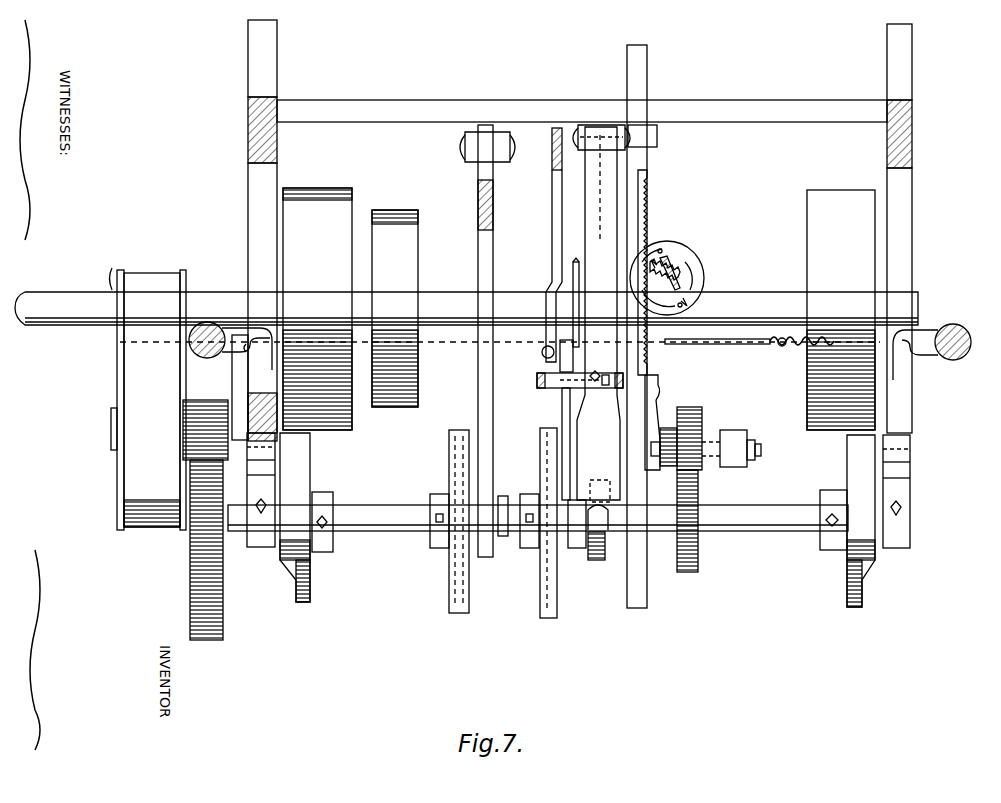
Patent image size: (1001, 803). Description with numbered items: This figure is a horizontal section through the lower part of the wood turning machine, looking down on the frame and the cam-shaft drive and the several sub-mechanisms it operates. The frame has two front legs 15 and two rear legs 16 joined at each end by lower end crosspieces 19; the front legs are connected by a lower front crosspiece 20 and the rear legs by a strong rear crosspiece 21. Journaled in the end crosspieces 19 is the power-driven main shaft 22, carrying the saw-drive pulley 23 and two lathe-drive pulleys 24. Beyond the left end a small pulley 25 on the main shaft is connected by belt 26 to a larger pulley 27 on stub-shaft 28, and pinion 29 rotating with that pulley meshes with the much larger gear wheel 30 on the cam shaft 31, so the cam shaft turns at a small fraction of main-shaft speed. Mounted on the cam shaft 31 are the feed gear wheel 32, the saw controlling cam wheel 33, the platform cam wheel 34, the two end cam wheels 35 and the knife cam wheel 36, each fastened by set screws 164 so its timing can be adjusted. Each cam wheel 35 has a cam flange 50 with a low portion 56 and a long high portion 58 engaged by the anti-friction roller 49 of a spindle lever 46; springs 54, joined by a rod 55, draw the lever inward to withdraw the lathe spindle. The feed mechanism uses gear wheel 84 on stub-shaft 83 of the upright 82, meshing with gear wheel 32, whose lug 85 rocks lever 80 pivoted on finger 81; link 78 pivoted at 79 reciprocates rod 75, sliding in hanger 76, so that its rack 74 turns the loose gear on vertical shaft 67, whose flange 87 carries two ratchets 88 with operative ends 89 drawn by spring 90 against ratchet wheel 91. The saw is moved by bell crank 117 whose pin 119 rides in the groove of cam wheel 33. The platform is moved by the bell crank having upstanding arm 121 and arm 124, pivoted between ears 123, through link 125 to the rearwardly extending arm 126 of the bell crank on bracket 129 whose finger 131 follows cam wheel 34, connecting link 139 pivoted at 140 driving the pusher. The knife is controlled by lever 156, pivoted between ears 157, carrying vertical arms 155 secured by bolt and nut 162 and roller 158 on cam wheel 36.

The front leg 15 is at (265, 478).
The rear leg 16 is at (266, 74).
The lower end crosspiece 19 is at (266, 178).
The lower front crosspiece 20 is at (806, 540).
The rear crosspiece 21 is at (582, 111).
The main shaft 22 is at (35, 292).
The saw-drive pulley 23 is at (395, 308).
The lathe-drive pulley 24 is at (579, 309).
The small pulley 25 is at (106, 264).
The belt 26 is at (130, 352).
The larger pulley 27 is at (118, 392).
The stub-shaft 28 is at (110, 428).
The pinion 29 is at (200, 425).
The gear wheel 30 is at (190, 592).
The cam shaft 31 is at (236, 534).
The gear wheel 32 is at (690, 572).
The saw controlling cam wheel 33 is at (449, 600).
The cam wheel 34 is at (546, 602).
The cam wheel 35 is at (311, 584).
The cam wheel 36 is at (597, 562).
The lever 46 is at (207, 322).
The anti-friction roller 49 is at (290, 456).
The cam flange 50 is at (285, 468).
The spring 54 is at (795, 350).
The rod 55 is at (762, 345).
The low portion 56 is at (298, 602).
The high portion 58 is at (282, 552).
The vertical shaft 67 is at (690, 262).
The rack 74 is at (648, 200).
The rod 75 is at (648, 164).
The hanger 76 is at (658, 134).
The link 78 is at (658, 412).
The pivot 79 is at (660, 382).
The lever 80 is at (658, 468).
The finger 81 is at (652, 452).
The upright 82 is at (736, 430).
The stub-shaft 83 is at (758, 450).
The gear wheel 84 is at (690, 404).
The lug 85 is at (690, 430).
The flange 87 is at (700, 280).
The ratchet 88 is at (670, 258).
The operative end 89 is at (656, 262).
The spring 90 is at (690, 284).
The ratchet wheel 91 is at (685, 270).
The bell crank 117 is at (478, 190).
The pin 119 is at (470, 520).
The upstanding arm 121 is at (554, 166).
The ears 123 is at (566, 128).
The arm 124 is at (553, 230).
The link 125 is at (556, 362).
The rearwardly extending arm 126 is at (562, 410).
The bracket 129 is at (570, 548).
The finger 131 is at (540, 440).
The connecting link 139 is at (572, 265).
The pivot 140 is at (582, 350).
The vertical arm 155 is at (537, 380).
The lever 156 is at (598, 328).
The ears 157 is at (580, 130).
The anti-friction roller 158 is at (606, 562).
The bolt and nut 162 is at (598, 368).
The set screw 164 is at (326, 520).